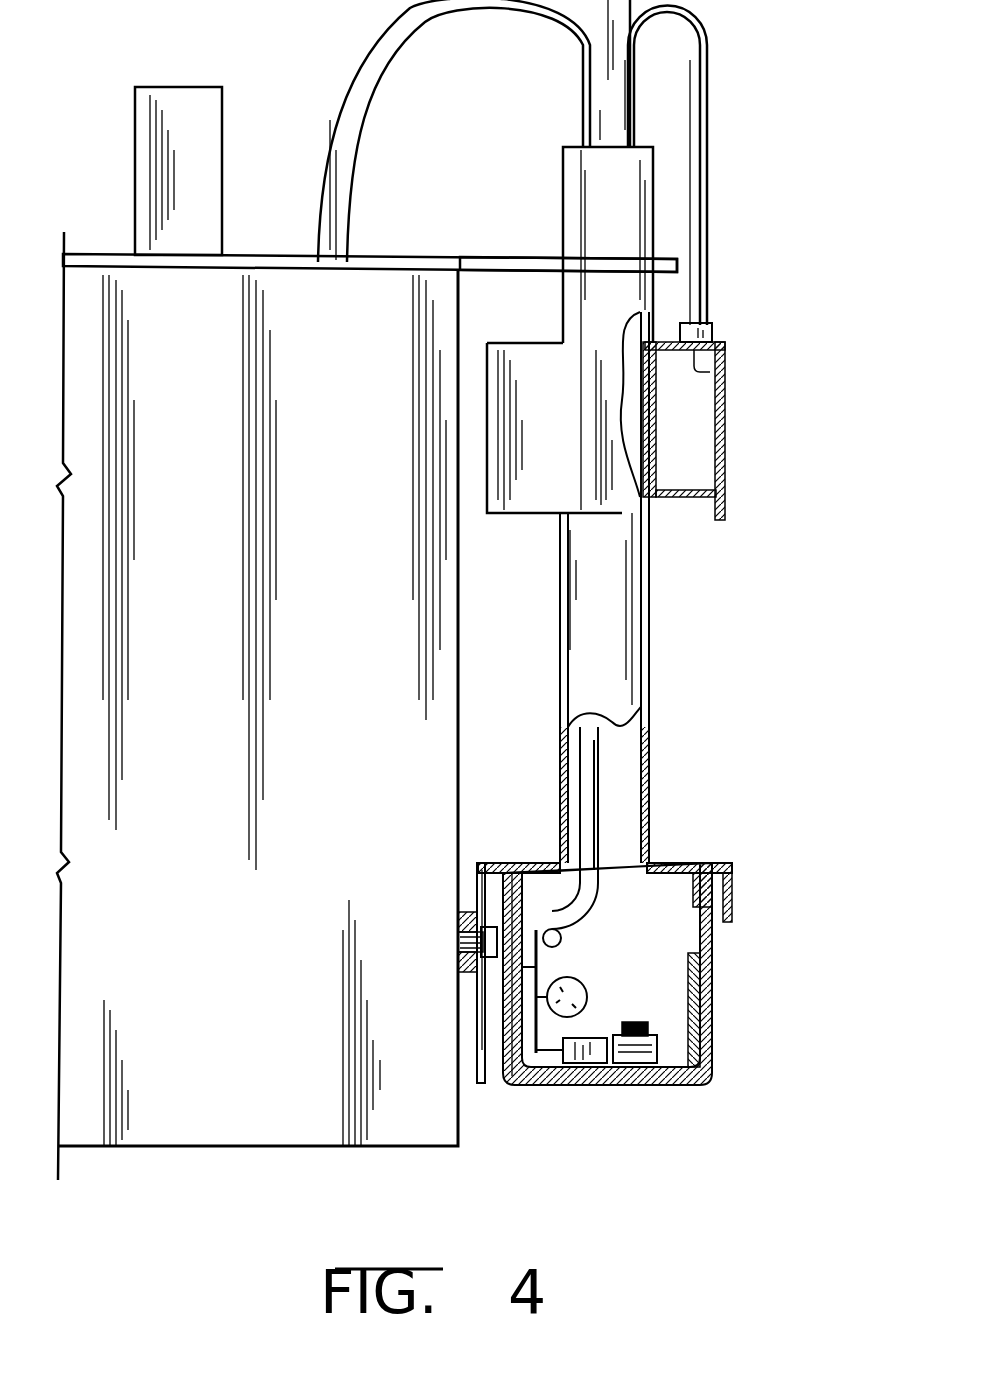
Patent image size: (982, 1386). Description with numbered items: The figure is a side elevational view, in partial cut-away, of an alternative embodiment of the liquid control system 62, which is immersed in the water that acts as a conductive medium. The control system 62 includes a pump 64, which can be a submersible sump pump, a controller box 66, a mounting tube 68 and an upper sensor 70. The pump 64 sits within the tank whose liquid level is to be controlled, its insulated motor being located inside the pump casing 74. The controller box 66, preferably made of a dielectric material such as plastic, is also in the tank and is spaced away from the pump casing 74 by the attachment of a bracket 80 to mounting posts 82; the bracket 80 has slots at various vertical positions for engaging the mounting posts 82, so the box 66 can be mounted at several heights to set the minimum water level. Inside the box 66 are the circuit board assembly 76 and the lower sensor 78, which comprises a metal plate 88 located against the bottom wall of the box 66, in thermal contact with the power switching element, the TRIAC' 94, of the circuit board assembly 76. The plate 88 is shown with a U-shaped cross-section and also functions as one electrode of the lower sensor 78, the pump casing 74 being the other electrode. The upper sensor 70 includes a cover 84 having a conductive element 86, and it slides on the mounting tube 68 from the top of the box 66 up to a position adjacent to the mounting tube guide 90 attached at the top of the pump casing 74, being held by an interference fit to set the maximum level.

The control system 62 is at (750, 644).
The pump 64 is at (99, 248).
The controller box 66 is at (636, 979).
The mounting tube 68 is at (583, 633).
The upper sensor 70 is at (736, 406).
The pump casing 74 is at (270, 318).
The circuit board assembly 76 is at (584, 965).
The lower sensor 78 is at (678, 1052).
The bracket 80 is at (484, 1053).
The mounting posts 82 is at (468, 912).
The cover 84 is at (726, 457).
The conductive element 86 is at (712, 343).
The metal plate 88 is at (702, 1066).
The mounting tube guide 90 is at (520, 263).
The TRIAC' 94 is at (593, 1036).